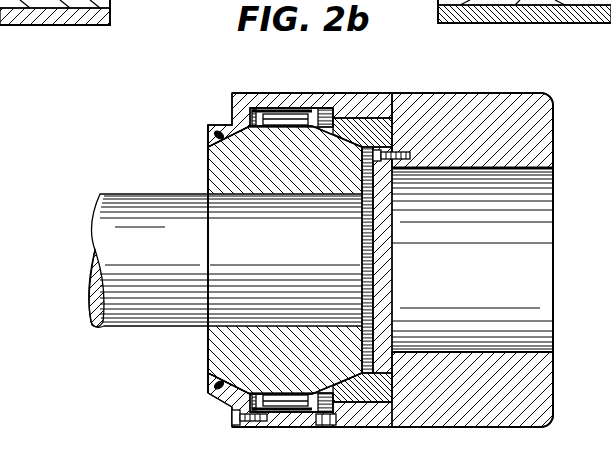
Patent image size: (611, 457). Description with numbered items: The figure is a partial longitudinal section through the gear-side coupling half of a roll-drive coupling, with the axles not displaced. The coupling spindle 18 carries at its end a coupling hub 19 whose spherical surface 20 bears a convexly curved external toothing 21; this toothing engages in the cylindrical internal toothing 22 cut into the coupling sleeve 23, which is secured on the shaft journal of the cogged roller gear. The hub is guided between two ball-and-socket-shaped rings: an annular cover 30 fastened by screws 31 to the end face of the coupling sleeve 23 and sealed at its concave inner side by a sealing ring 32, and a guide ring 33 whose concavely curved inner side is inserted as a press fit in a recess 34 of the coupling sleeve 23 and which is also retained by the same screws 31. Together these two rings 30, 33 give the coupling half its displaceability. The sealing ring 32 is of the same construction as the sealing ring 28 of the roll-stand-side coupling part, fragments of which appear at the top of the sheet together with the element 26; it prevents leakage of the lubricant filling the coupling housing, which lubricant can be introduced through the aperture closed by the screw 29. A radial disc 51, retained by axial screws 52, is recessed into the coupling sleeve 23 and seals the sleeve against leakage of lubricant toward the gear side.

The coupling spindle 18 is at (113, 199).
The coupling hub 19 is at (212, 163).
The spherical surface 20 is at (331, 118).
The external toothing 21 is at (263, 93).
The internal toothing 22 is at (300, 112).
The coupling sleeve 23 is at (548, 373).
The plate 26 is at (70, 26).
The sealing ring 28 is at (462, 24).
The screw 29 is at (345, 421).
The annular cover 30 is at (214, 401).
The screws 31 is at (236, 418).
The sealing ring 32 is at (210, 384).
The guide ring 33 is at (382, 118).
The recess 34 is at (363, 120).
The radial disc 51 is at (394, 276).
The axial screws 52 is at (400, 150).